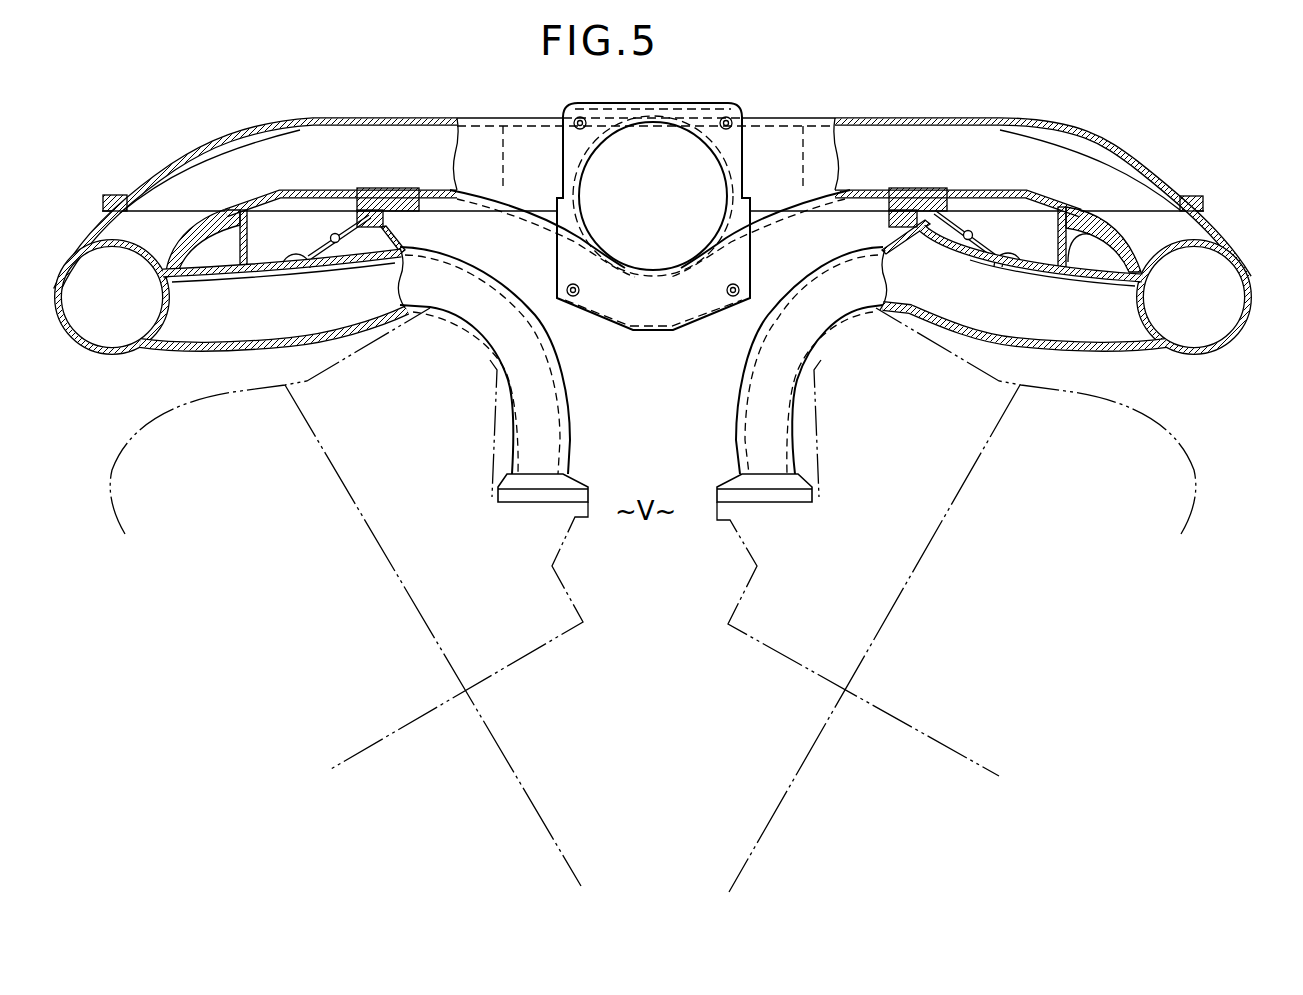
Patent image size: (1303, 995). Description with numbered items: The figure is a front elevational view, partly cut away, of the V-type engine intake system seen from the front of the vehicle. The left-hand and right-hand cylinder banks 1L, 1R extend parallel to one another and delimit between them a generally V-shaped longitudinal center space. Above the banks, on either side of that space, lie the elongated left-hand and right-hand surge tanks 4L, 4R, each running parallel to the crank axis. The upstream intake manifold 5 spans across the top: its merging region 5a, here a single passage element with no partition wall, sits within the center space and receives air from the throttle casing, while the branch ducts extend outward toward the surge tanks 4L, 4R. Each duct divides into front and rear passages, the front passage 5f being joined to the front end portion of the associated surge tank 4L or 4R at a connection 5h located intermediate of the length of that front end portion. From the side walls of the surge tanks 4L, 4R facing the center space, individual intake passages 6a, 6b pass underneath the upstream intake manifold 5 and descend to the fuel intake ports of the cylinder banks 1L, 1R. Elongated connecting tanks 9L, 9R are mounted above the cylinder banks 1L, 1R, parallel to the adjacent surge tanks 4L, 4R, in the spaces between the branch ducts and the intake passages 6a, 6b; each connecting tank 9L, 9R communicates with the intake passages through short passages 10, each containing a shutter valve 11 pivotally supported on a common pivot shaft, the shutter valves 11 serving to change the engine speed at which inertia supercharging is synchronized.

The upstream intake manifold 5 is at (394, 116).
The front passage 5f is at (315, 146).
The connection 5h is at (124, 242).
The merging region 5a is at (668, 150).
The left-hand surge tank 4L is at (128, 323).
The right-hand surge tank 4R is at (1212, 305).
The connecting tank 9L is at (232, 252).
The connecting tank 9R is at (1078, 250).
The short passage 10 is at (337, 245).
The shutter valve 11 is at (364, 238).
The intake passage 6a is at (297, 326).
The intake passage 6b is at (990, 325).
The left-hand cylinder bank 1L is at (130, 500).
The right-hand cylinder bank 1R is at (1133, 470).